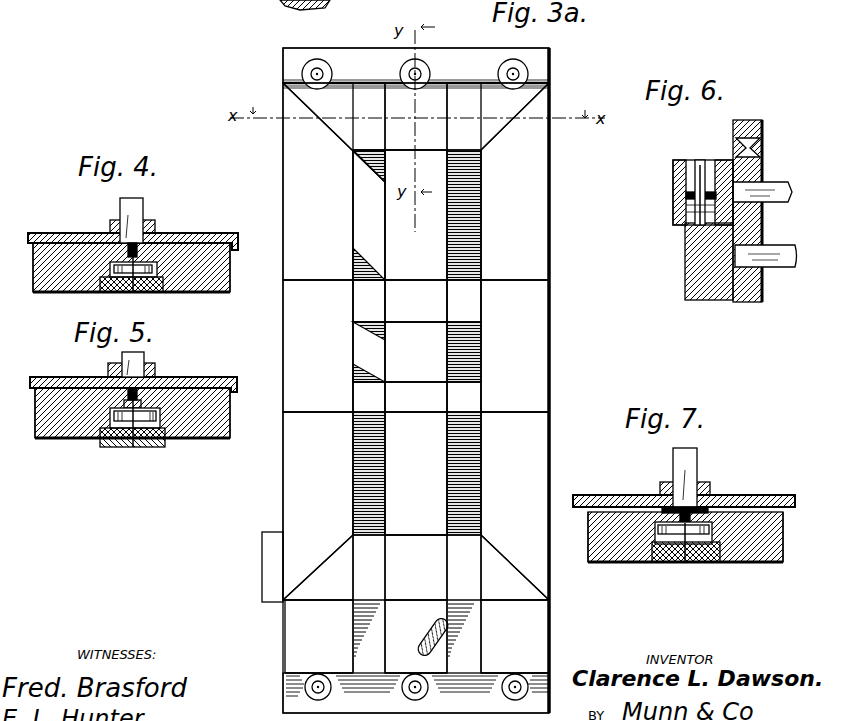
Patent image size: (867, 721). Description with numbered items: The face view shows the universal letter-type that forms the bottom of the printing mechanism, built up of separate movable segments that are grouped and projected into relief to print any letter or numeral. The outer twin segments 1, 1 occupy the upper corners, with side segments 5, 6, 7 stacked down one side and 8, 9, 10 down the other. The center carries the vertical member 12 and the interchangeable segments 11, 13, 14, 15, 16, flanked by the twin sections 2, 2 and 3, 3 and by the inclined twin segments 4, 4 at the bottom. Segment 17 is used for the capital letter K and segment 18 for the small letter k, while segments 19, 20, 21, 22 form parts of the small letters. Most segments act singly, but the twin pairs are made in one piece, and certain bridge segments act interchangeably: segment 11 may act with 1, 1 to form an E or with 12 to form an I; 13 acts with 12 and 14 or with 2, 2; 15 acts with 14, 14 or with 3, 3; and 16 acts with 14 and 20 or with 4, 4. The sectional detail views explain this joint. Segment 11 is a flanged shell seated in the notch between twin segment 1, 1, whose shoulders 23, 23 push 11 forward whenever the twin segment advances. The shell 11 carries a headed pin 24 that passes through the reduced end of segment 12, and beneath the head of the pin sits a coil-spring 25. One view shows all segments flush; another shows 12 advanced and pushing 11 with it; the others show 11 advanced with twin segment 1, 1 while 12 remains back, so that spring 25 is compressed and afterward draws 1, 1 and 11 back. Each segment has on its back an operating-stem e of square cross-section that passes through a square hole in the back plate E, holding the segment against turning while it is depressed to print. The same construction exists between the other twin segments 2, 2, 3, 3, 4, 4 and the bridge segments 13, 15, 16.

In FIG. 3A, the twin segment 1 is at (416, 132).
In FIG. 4, the twin segment 1 is at (33, 268).
In FIG. 5, the twin segment 1 is at (66, 438).
In FIG. 6, the twin segment 1 is at (722, 160).
In FIG. 7, the twin segment 1 is at (612, 562).
In FIG. 3A, the twin segment 2 is at (474, 292).
In FIG. 3A, the twin segment 3 is at (417, 397).
In FIG. 3A, the twin segment 4 is at (416, 567).
In FIG. 3A, the letter-type segment 5 is at (318, 181).
In FIG. 3A, the letter-type segment 6 is at (318, 346).
In FIG. 3A, the letter-type segment 7 is at (318, 506).
In FIG. 3A, the letter-type segment 8 is at (515, 181).
In FIG. 3A, the letter-type segment 9 is at (515, 346).
In FIG. 3A, the letter-type segment 10 is at (515, 506).
In FIG. 3A, the flanged shell segment 11 is at (416, 116).
In FIG. 4, the flanged shell segment 11 is at (155, 286).
In FIG. 5, the flanged shell segment 11 is at (152, 447).
In FIG. 6, the flanged shell segment 11 is at (673, 213).
In FIG. 7, the flanged shell segment 11 is at (700, 562).
In FIG. 3A, the vertical member segment 12 is at (416, 215).
In FIG. 4, the vertical member segment 12 is at (112, 282).
In FIG. 5, the vertical member segment 12 is at (118, 447).
In FIG. 6, the vertical member segment 12 is at (673, 196).
In FIG. 7, the vertical member segment 12 is at (718, 497).
In FIG. 3A, the bridge segment 13 is at (416, 301).
In FIG. 3A, the twin segment 14 is at (416, 428).
In FIG. 3A, the bridge segment 15 is at (416, 397).
In FIG. 3A, the bridge segment 16 is at (416, 567).
In FIG. 3A, the letter-type segment 17 is at (369, 215).
In FIG. 3A, the letter-type segment 18 is at (369, 352).
In FIG. 3A, the letter-type segment 19 is at (296, 638).
In FIG. 3A, the letter-type segment 20 is at (417, 636).
In FIG. 3A, the letter-type segment 21 is at (494, 630).
In FIG. 3A, the letter-type segment 22 is at (272, 567).
In FIG. 4, the shoulders 23 is at (68, 271).
In FIG. 5, the shoulders 23 is at (100, 420).
In FIG. 7, the shoulders 23 is at (622, 535).
In FIG. 4, the headed pin 24 is at (152, 240).
In FIG. 5, the headed pin 24 is at (146, 410).
In FIG. 6, the headed pin 24 is at (688, 165).
In FIG. 7, the headed pin 24 is at (665, 528).
In FIG. 4, the coil-spring 25 is at (134, 292).
In FIG. 5, the coil-spring 25 is at (140, 447).
In FIG. 6, the coil-spring 25 is at (700, 226).
In FIG. 7, the coil-spring 25 is at (686, 562).
In FIG. 3A, the back plate E is at (416, 380).
In FIG. 4, the back plate E is at (105, 235).
In FIG. 5, the back plate E is at (97, 378).
In FIG. 6, the back plate E is at (763, 160).
In FIG. 7, the back plate E is at (626, 495).
In FIG. 4, the operating-stem e is at (143, 212).
In FIG. 5, the operating-stem e is at (145, 362).
In FIG. 6, the operating-stem e is at (777, 186).
In FIG. 7, the operating-stem e is at (698, 466).